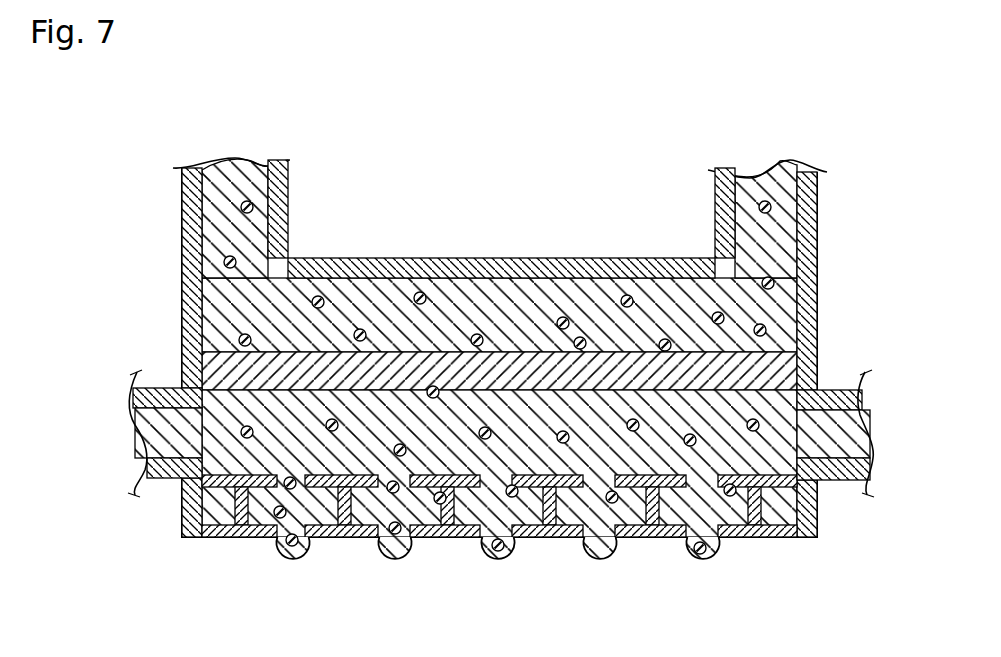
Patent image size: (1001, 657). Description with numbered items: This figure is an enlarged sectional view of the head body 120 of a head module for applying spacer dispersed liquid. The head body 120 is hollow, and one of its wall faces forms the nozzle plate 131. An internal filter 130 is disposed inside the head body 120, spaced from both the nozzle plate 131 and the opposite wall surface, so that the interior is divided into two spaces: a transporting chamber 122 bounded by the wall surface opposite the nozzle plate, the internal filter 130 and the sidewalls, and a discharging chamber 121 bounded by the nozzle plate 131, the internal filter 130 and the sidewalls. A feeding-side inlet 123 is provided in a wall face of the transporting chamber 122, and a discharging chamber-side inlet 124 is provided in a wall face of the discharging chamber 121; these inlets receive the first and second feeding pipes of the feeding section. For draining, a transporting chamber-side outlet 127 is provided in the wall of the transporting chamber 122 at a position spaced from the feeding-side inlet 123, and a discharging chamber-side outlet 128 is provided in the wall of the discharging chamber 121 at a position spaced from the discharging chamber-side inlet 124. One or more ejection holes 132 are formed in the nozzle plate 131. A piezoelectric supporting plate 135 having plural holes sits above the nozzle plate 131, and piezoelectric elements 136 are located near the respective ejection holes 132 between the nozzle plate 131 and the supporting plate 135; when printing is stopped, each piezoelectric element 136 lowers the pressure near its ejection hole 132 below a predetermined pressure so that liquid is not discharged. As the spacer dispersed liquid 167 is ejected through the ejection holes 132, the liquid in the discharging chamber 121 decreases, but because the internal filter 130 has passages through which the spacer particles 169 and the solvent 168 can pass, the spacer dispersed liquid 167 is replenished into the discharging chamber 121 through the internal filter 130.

The head body 120 is at (141, 138).
The discharging chamber 121 is at (419, 405).
The transporting chamber 122 is at (511, 303).
The feeding-side inlet 123 is at (797, 277).
The discharging chamber-side inlet 124 is at (792, 466).
The transporting chamber-side outlet 127 is at (288, 277).
The discharging chamber-side outlet 128 is at (214, 473).
The internal filter 130 is at (333, 375).
The nozzle plate 131 is at (205, 533).
The ejection hole 132 is at (279, 545).
The piezoelectric supporting plate 135 is at (210, 480).
The piezoelectric element 136 is at (238, 508).
The spacer dispersed liquid 167 is at (706, 197).
The solvent 168 is at (670, 288).
The spacer particle 169 is at (567, 329).